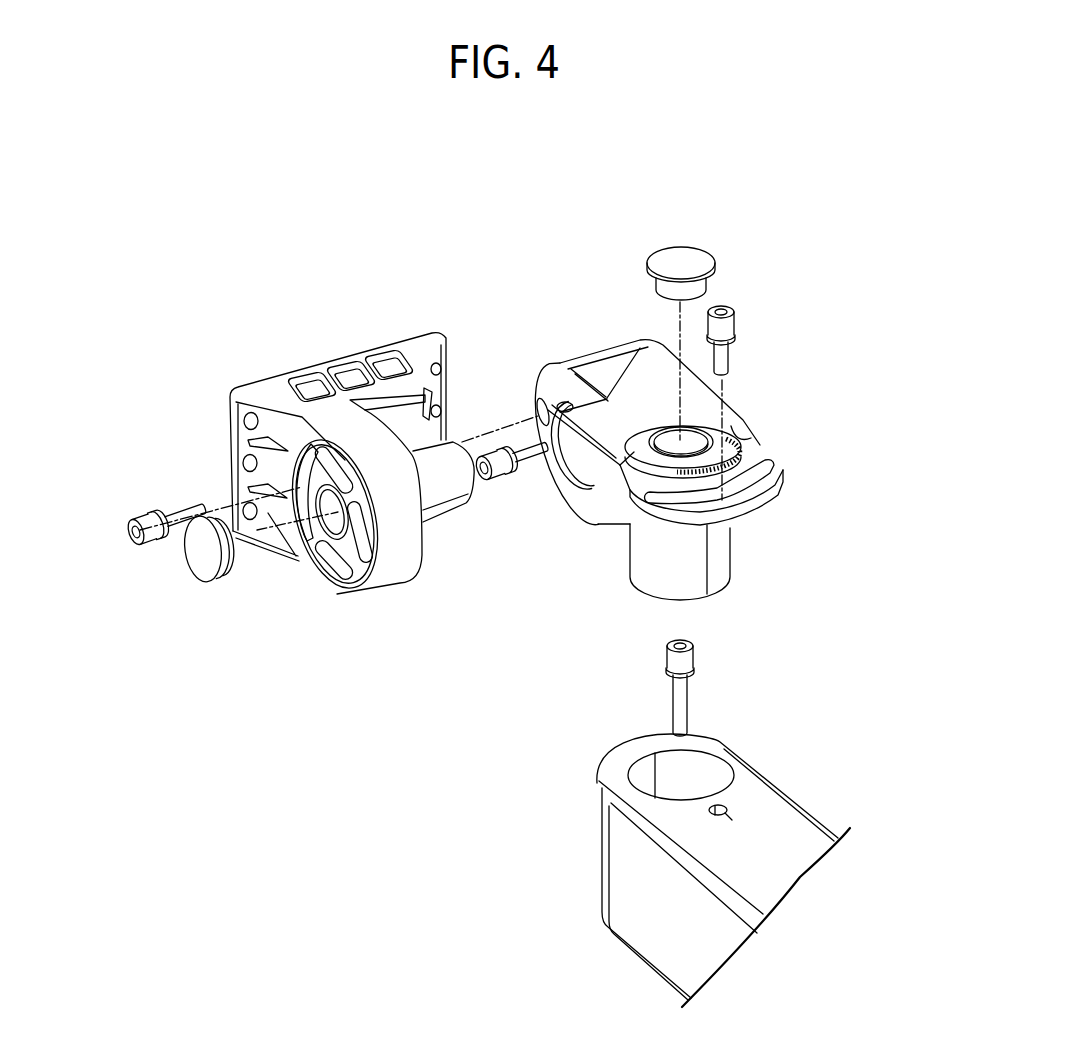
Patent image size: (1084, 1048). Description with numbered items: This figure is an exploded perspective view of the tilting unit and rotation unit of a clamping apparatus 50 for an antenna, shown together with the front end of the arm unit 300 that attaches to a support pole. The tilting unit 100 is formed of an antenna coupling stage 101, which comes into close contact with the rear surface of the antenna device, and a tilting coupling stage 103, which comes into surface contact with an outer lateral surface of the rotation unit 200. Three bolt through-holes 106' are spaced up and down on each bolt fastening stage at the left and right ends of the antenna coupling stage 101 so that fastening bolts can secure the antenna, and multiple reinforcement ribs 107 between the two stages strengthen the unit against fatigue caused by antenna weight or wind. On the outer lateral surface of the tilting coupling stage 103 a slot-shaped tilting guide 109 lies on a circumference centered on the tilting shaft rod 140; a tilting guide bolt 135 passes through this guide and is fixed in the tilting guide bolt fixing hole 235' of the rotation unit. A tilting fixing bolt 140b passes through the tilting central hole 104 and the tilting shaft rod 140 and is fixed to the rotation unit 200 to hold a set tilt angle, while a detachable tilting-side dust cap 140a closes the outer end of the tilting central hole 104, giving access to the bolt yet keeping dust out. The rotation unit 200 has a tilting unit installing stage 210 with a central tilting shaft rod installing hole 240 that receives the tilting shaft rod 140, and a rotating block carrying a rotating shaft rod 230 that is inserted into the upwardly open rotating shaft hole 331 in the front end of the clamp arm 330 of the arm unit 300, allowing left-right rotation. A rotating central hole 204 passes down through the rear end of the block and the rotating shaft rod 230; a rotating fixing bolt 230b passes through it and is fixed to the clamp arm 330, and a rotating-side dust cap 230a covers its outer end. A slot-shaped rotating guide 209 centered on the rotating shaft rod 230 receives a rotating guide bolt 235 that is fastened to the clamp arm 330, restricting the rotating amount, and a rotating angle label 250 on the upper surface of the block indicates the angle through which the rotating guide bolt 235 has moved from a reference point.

The clamping apparatus 50 is at (348, 209).
The tilting unit 100 is at (272, 596).
The antenna coupling stage 101 is at (323, 362).
The tilting coupling stage 103 is at (385, 580).
The tilting central hole 104 is at (333, 584).
The bolt through-holes 106' is at (200, 463).
The reinforcement ribs 107 is at (266, 440).
The tilting guide 109 is at (303, 545).
The tilting guide bolt 135 is at (146, 515).
The tilting shaft rod 140 is at (443, 523).
The tilting-side dust cap 140a is at (210, 583).
The tilting fixing bolt 140b is at (508, 484).
The rotation unit 200 is at (762, 405).
The rotating central hole 204 is at (668, 440).
The rotating guide 209 is at (757, 475).
The tilting unit installing stage 210 is at (628, 348).
The rotating shaft rod 230 is at (722, 547).
The rotating-side dust cap 230a is at (672, 252).
The rotating fixing bolt 230b is at (688, 698).
The rotating guide bolt 235 is at (743, 359).
The tilting guide bolt fixing hole 235' is at (515, 367).
The tilting shaft rod installing hole 240 is at (563, 401).
The rotating angle label 250 is at (733, 432).
The arm unit 300 is at (588, 820).
The clamp arm 330 is at (647, 927).
The rotating shaft hole 331 is at (714, 780).